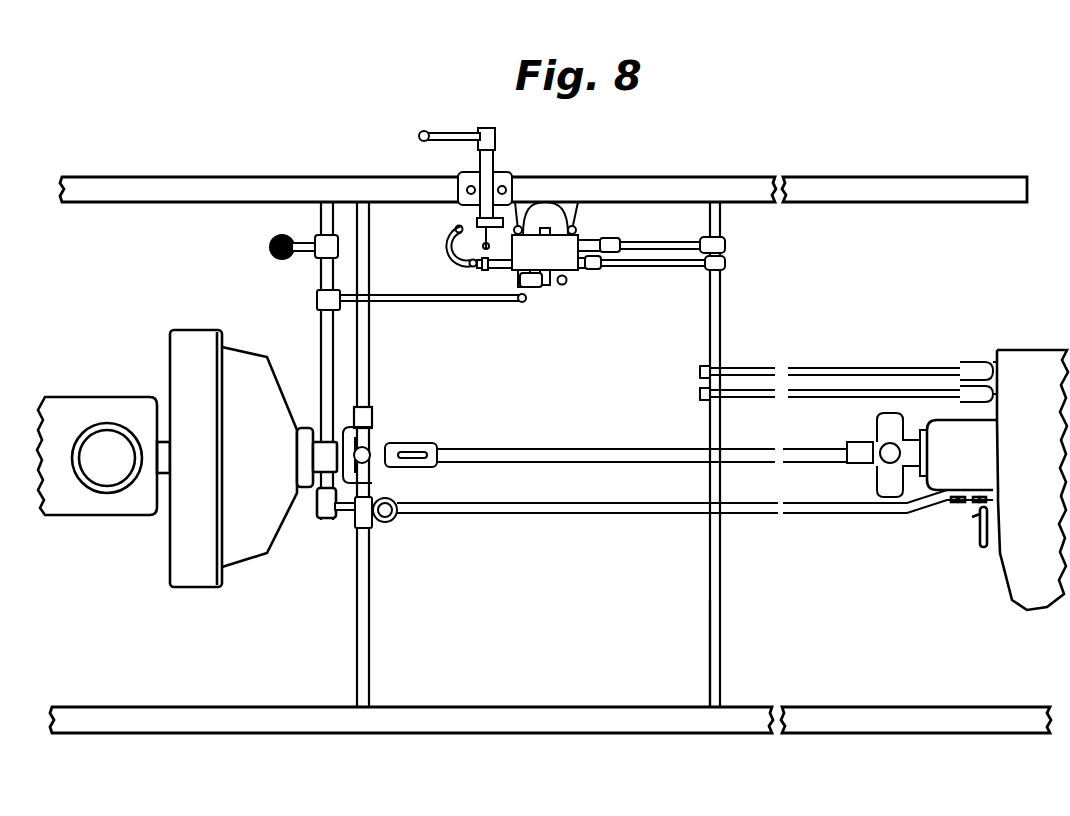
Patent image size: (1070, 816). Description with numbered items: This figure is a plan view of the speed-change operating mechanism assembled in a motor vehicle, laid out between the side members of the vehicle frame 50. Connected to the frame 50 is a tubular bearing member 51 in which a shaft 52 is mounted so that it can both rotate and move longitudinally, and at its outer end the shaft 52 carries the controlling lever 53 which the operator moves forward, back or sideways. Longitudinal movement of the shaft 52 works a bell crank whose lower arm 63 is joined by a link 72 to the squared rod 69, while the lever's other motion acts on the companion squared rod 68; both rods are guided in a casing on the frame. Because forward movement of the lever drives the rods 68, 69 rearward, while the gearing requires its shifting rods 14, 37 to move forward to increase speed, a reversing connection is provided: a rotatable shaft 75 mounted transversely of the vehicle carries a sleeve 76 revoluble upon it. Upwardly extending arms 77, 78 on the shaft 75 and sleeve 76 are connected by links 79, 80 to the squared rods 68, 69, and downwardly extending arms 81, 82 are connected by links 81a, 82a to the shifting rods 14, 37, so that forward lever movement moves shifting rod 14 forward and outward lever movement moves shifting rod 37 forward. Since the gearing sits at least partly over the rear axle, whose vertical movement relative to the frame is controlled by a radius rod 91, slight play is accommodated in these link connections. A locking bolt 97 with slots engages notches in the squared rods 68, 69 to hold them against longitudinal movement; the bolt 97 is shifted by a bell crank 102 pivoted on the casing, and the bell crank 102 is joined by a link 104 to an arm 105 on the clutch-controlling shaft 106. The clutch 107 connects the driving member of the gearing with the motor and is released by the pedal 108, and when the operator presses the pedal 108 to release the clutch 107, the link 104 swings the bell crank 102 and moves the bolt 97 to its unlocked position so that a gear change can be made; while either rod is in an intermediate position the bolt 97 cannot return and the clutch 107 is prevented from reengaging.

The shifting rod 14 is at (992, 385).
The shifting rod 37 is at (992, 385).
The frame 50 is at (250, 190).
The tubular bearing member 51 is at (488, 187).
The shaft 52 is at (494, 156).
The lever 53 is at (443, 128).
The arm 63 is at (455, 245).
The squared rod 68 is at (590, 240).
The squared rod 69 is at (580, 270).
The link 72 is at (478, 270).
The rotatable shaft 75 is at (716, 548).
The sleeve 76 is at (720, 320).
The upwardly extending arm 77 is at (724, 242).
The upwardly extending arm 78 is at (724, 262).
The link 79 is at (650, 242).
The link 80 is at (675, 262).
The downwardly extending arm 81 is at (699, 393).
The link 81a is at (837, 398).
The downwardly extending arm 82 is at (699, 371).
The link 82a is at (833, 368).
The radius rod 91 is at (852, 512).
The bolt 97 is at (548, 287).
The bell crank 102 is at (535, 288).
The link 104 is at (470, 302).
The arm 105 is at (317, 297).
The clutch-controlling shaft 106 is at (321, 328).
The clutch 107 is at (283, 517).
The pedal 108 is at (273, 254).